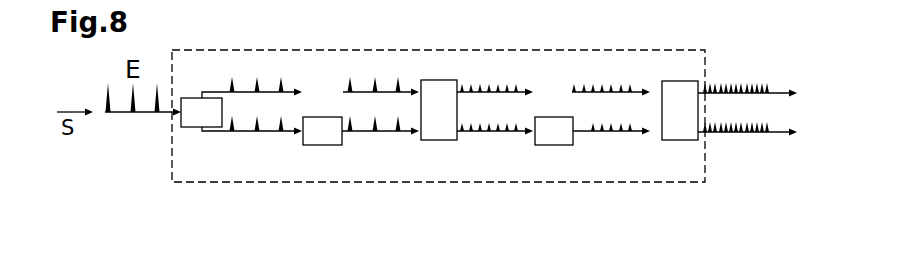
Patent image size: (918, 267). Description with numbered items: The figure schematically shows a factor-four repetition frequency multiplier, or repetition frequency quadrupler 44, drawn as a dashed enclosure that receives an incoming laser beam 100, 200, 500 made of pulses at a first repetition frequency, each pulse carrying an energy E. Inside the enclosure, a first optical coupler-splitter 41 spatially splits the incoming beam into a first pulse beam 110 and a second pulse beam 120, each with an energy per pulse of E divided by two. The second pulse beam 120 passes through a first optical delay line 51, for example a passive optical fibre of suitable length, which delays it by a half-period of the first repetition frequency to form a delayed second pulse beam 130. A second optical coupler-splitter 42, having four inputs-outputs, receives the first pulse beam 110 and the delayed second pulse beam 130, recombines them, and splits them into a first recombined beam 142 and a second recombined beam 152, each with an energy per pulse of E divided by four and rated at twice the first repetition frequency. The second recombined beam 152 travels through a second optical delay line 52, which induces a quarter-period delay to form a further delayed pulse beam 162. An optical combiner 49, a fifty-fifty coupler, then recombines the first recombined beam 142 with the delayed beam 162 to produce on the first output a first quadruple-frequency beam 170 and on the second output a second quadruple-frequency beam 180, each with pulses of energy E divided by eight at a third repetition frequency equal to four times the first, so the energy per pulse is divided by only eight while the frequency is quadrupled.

The laser beam 100 is at (109, 139).
The laser beam 200 is at (109, 139).
The laser beam 500 is at (141, 122).
The first optical coupler-splitter 41 is at (189, 128).
The second optical coupler-splitter 42 is at (438, 142).
The optical combiner 49 is at (672, 142).
The first optical delay line 51 is at (330, 146).
The second optical delay line 52 is at (550, 147).
The repetition frequency quadrupler 44 is at (343, 183).
The first pulse beam 110 is at (217, 82).
The second pulse beam 120 is at (242, 135).
The delayed second pulse beam 130 is at (382, 135).
The first recombined beam 142 is at (510, 87).
The second recombined beam 152 is at (490, 135).
The delayed second pulse beam 162 is at (606, 135).
The first quadruple-frequency beam 170 is at (760, 82).
The second quadruple-frequency beam 180 is at (733, 136).